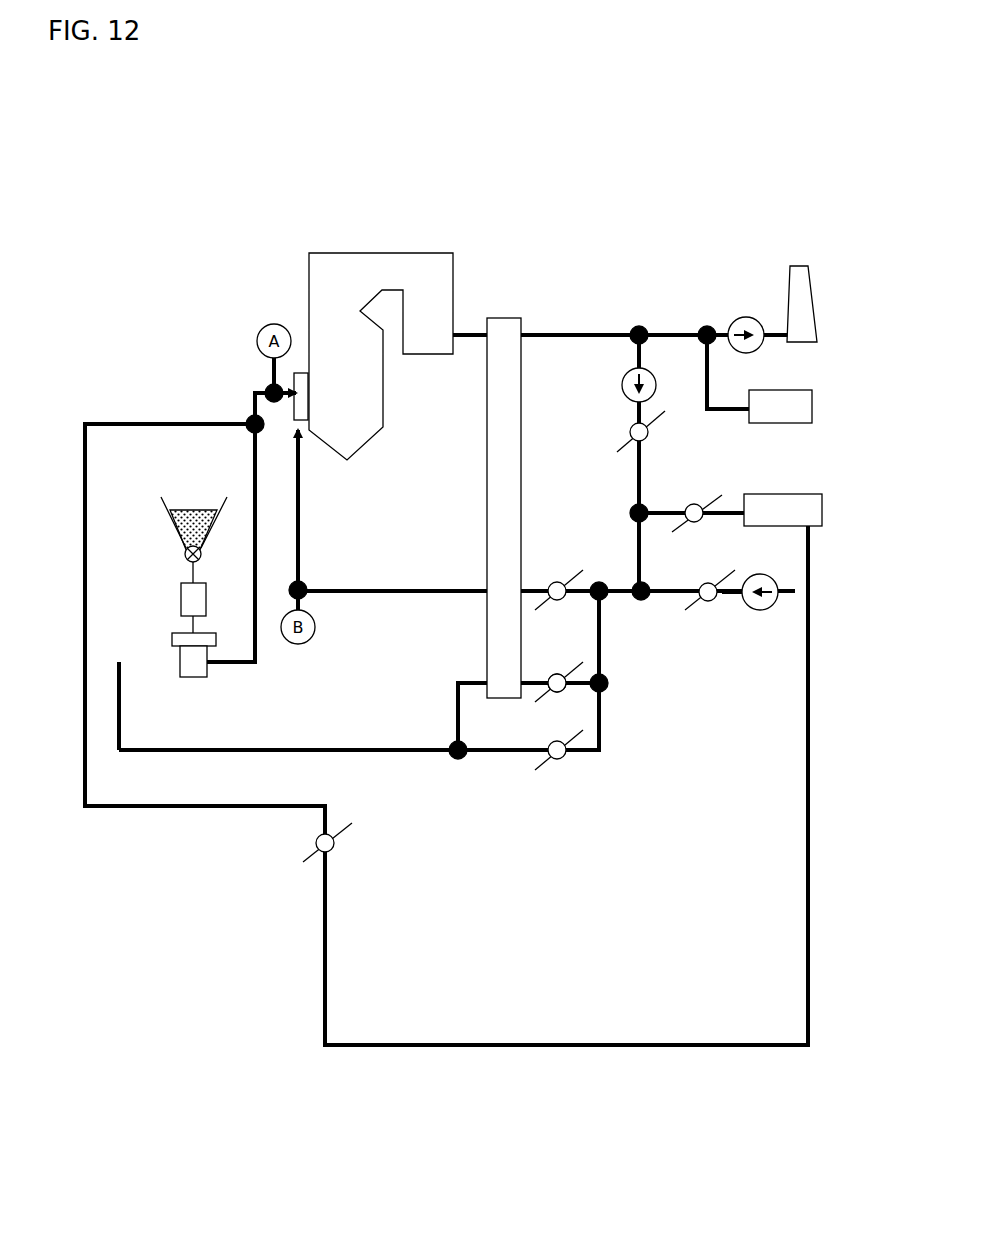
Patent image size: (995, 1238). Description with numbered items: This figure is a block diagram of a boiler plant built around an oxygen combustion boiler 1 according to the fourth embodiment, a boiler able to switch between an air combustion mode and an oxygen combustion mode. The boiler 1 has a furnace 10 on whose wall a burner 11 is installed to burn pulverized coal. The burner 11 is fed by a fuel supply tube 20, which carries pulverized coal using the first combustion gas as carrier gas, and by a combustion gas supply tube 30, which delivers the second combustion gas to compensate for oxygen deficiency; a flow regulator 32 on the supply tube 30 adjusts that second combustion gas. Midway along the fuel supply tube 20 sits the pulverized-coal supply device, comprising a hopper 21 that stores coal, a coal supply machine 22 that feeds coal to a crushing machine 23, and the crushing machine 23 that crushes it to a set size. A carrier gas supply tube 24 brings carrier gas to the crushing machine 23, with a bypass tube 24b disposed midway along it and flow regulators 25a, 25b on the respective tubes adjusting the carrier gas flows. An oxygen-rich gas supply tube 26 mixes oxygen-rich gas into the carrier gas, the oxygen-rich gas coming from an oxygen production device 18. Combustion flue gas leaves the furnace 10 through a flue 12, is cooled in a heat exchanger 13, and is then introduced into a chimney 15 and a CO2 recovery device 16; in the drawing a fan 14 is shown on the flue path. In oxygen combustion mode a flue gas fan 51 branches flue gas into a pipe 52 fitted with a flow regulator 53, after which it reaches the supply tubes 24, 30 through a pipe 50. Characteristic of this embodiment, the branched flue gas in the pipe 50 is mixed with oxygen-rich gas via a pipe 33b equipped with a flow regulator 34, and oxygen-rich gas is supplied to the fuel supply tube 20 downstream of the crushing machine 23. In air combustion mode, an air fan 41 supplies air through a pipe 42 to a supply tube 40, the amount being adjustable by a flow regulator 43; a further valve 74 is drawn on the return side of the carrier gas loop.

The oxygen combustion boiler 1 is at (381, 230).
The furnace 10 is at (323, 308).
The burner 11 is at (295, 423).
The flue 12 is at (470, 330).
The heat exchanger 13 is at (500, 318).
The induced draft fan 14 is at (743, 312).
The chimney 15 is at (805, 312).
The CO2 recovery device 16 is at (780, 398).
The oxygen production device 18 is at (783, 506).
The fuel supply tube 20 is at (252, 408).
The hopper 21 is at (170, 518).
The coal supply machine 22 is at (188, 608).
The crushing machine 23 is at (193, 655).
The carrier gas supply tube 24 is at (160, 752).
The bypass tube 24b is at (550, 673).
The flow regulator 25a is at (560, 760).
The flow regulator 25b is at (568, 692).
The oxygen-rich gas supply tube 26 is at (168, 810).
The combustion gas supply tube 30 is at (337, 597).
The flow regulator 32 is at (568, 600).
The pipe 33b is at (663, 510).
The flow regulator 34 is at (700, 500).
The supply tube 40 is at (673, 597).
The air fan 41 is at (758, 612).
The pipe 42 is at (728, 597).
The flow regulator 43 is at (707, 600).
The pipe 50 is at (636, 458).
The flue gas fan 51 is at (658, 385).
The pipe 52 is at (625, 362).
The flow regulator 53 is at (652, 432).
The valve 74 is at (308, 847).